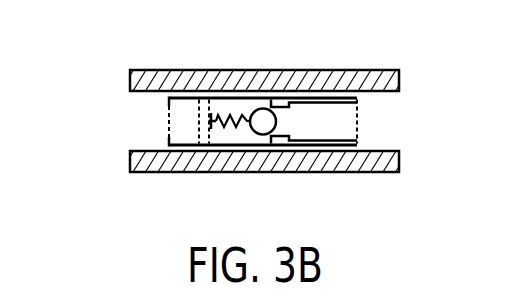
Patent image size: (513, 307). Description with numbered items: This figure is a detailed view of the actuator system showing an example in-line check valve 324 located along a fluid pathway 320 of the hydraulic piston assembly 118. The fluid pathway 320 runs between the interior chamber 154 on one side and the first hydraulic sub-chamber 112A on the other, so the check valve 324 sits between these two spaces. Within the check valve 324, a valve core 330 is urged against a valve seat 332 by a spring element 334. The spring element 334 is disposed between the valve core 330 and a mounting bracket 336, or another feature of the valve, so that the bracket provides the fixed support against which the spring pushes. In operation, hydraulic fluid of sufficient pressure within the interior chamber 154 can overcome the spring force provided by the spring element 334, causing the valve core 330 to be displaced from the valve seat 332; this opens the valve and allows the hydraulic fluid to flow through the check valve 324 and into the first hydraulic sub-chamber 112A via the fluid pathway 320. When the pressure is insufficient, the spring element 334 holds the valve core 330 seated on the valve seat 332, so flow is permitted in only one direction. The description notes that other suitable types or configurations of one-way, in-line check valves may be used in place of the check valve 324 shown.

The first hydraulic sub-chamber 112A is at (109, 99).
The hydraulic piston assembly 118 is at (343, 80).
The interior chamber 154 is at (422, 95).
The fluid pathway 320 is at (396, 135).
The check valve 324 is at (231, 97).
The valve core 330 is at (264, 122).
The valve seat 332 is at (282, 102).
The spring element 334 is at (224, 125).
The mounting bracket 336 is at (205, 108).